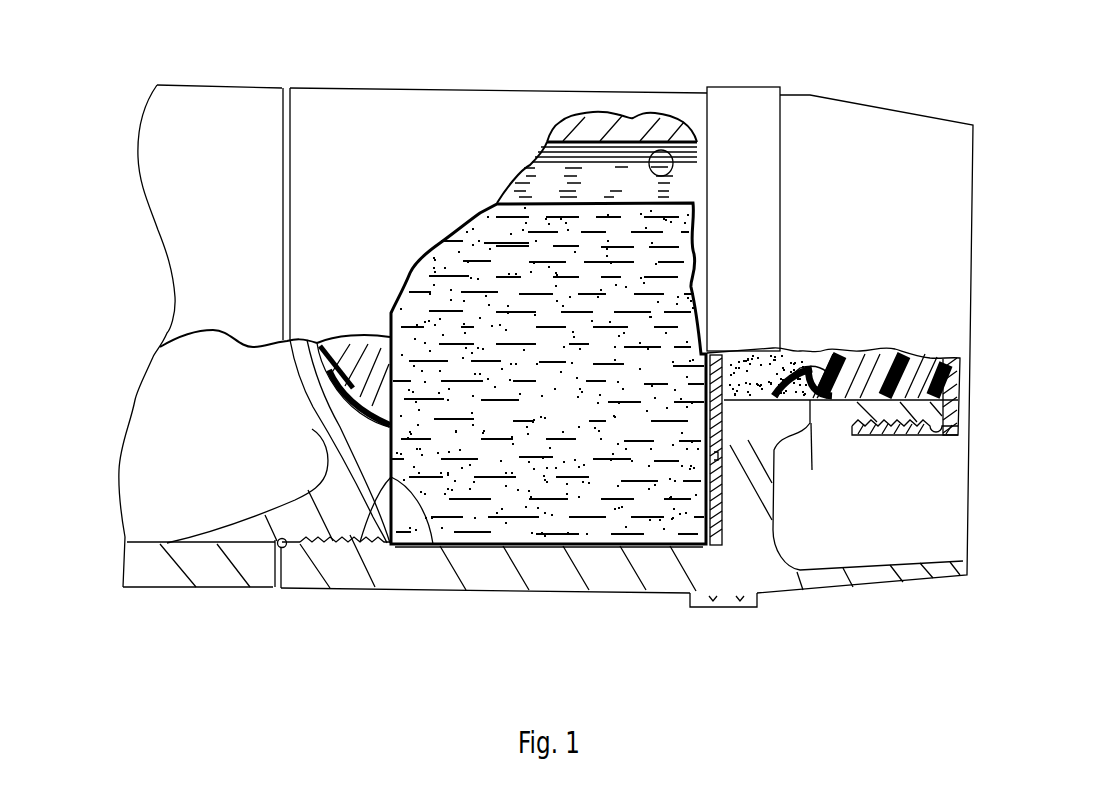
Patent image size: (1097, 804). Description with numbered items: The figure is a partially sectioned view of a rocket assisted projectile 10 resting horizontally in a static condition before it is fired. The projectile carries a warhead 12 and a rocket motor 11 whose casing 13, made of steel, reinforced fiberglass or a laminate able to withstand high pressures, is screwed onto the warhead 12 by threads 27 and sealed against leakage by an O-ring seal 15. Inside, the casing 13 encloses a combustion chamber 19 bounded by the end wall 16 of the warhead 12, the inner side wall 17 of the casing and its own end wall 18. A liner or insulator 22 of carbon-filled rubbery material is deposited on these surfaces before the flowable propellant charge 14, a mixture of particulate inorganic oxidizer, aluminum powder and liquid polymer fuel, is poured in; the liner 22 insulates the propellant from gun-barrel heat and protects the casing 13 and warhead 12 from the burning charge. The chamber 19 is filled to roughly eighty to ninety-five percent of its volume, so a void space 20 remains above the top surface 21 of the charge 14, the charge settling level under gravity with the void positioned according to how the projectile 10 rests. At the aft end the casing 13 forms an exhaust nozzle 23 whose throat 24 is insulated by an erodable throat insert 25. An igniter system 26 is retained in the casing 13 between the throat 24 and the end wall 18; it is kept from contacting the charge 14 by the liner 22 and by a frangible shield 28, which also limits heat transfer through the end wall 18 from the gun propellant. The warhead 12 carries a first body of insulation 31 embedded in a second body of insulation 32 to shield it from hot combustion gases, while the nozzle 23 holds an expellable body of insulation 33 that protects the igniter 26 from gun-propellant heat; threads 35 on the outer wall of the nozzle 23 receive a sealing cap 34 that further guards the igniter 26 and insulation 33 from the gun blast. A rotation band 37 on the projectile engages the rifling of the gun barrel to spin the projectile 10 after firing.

The rocket assisted projectile 10 is at (211, 186).
The rocket motor 11 is at (503, 607).
The warhead 12 is at (168, 604).
The casing 13 is at (625, 568).
The flowable propellant charge 14 is at (594, 497).
The O-ring seal 15 is at (266, 558).
The end wall 16 is at (368, 547).
The inner side wall 17 is at (546, 557).
The end wall 18 is at (720, 440).
The combustion chamber 19 is at (546, 412).
The void space 20 is at (615, 190).
The top surface 21 is at (547, 202).
The liner or insulator 22 is at (661, 150).
The exhaust nozzle 23 is at (846, 436).
The throat 24 is at (860, 350).
The throat insert 25 is at (812, 470).
The igniter system 26 is at (770, 380).
The threads 27 is at (350, 560).
The shield 28 is at (720, 440).
The first body of insulation 31 is at (383, 427).
The second body of insulation 32 is at (345, 422).
The expellable body of insulation 33 is at (930, 368).
The sealing cap 34 is at (900, 433).
The threads 35 is at (913, 433).
The rotation band 37 is at (750, 117).